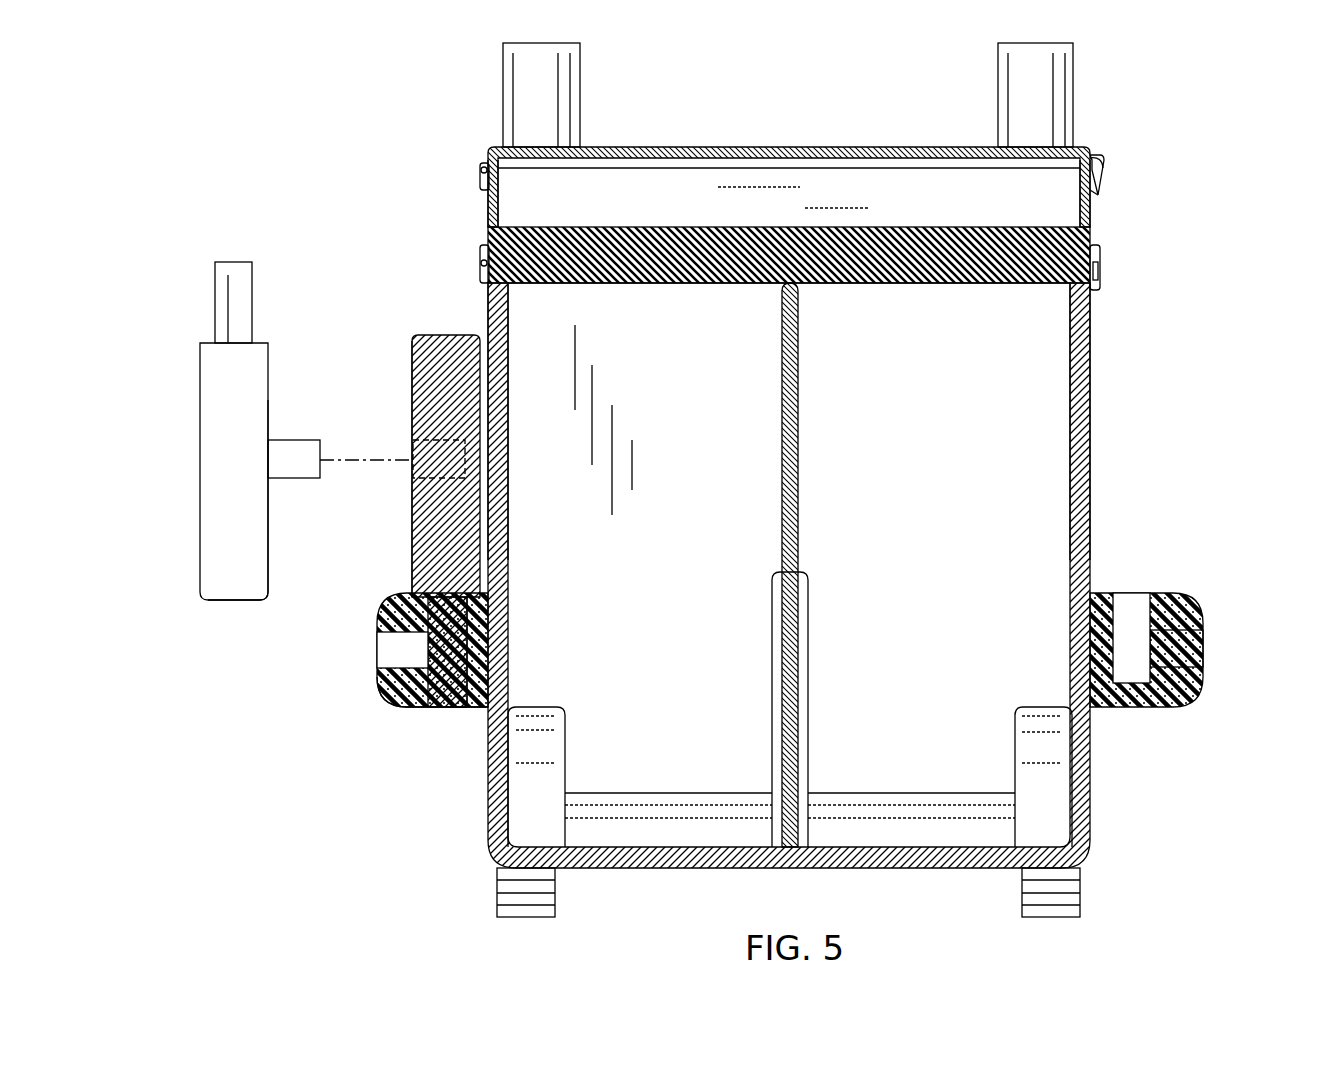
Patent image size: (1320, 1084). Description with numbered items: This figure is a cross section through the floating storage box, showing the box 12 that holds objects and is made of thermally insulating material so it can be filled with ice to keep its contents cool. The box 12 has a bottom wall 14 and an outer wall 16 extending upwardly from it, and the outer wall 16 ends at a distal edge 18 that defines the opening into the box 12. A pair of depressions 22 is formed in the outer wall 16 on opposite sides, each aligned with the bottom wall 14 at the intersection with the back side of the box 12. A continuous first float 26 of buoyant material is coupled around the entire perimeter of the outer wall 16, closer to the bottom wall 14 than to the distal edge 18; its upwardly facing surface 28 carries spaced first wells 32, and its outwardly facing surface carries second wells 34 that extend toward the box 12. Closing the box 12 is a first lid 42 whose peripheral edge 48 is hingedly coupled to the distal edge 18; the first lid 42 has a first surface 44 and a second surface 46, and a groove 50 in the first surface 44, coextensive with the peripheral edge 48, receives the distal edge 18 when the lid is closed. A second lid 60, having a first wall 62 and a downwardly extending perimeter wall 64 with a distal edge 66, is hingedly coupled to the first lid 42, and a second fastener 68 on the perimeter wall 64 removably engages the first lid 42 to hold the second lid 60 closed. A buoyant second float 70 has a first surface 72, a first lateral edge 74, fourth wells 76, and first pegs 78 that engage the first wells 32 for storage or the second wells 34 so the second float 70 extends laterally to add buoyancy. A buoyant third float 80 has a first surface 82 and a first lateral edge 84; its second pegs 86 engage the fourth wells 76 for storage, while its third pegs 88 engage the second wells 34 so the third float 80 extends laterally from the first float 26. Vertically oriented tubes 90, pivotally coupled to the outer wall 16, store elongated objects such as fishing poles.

The box 12 is at (1090, 490).
The bottom wall 14 is at (775, 868).
The outer wall 16 is at (490, 308).
The distal edge 18 is at (515, 228).
The depressions 22 is at (540, 707).
The first float 26 is at (405, 707).
The upwardly facing surface 28 is at (385, 605).
The first wells 32 is at (1133, 600).
The second wells 34 is at (372, 650).
The first lid 42 is at (1100, 240).
The first surface 44 is at (1015, 283).
The second surface 46 is at (490, 152).
The peripheral edge 48 is at (1094, 218).
The groove 50 is at (1090, 312).
The second lid 60 is at (1085, 153).
The first wall 62 is at (768, 150).
The perimeter wall 64 is at (1102, 165).
The distal edge 66 is at (1093, 210).
The second fastener 68 is at (1100, 160).
The second float 70 is at (410, 370).
The first surface 72 is at (412, 392).
The first lateral edge 74 is at (470, 707).
The fourth wells 76 is at (408, 470).
The first pegs 78 is at (437, 707).
The third float 80 is at (200, 420).
The first surface 82 is at (268, 575).
The first lateral edge 84 is at (230, 345).
The second pegs 86 is at (295, 440).
The third pegs 88 is at (255, 268).
The tubes 90 is at (583, 77).